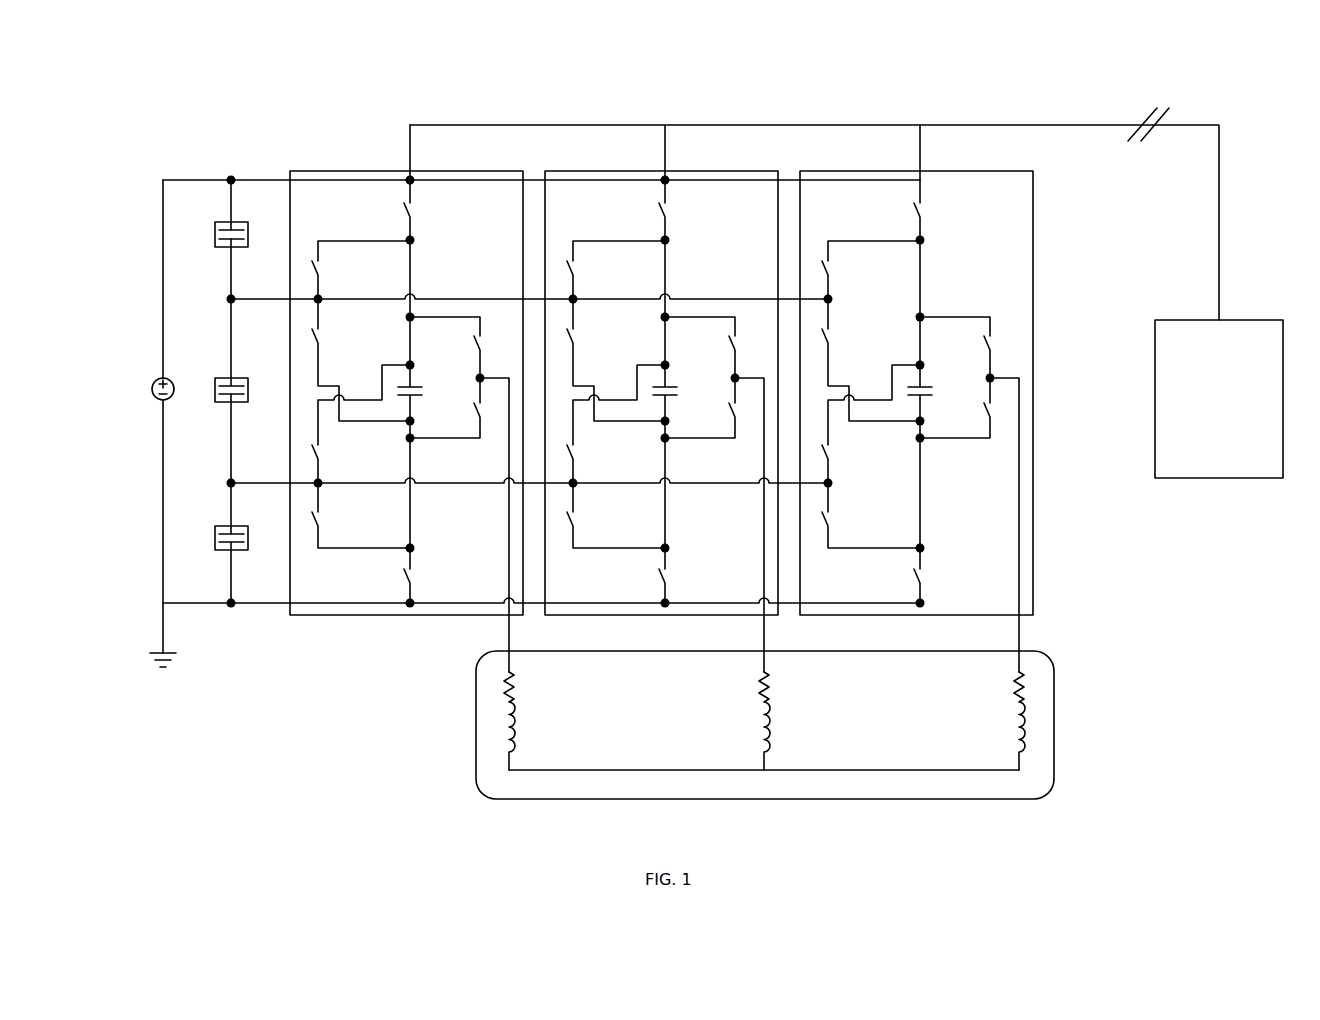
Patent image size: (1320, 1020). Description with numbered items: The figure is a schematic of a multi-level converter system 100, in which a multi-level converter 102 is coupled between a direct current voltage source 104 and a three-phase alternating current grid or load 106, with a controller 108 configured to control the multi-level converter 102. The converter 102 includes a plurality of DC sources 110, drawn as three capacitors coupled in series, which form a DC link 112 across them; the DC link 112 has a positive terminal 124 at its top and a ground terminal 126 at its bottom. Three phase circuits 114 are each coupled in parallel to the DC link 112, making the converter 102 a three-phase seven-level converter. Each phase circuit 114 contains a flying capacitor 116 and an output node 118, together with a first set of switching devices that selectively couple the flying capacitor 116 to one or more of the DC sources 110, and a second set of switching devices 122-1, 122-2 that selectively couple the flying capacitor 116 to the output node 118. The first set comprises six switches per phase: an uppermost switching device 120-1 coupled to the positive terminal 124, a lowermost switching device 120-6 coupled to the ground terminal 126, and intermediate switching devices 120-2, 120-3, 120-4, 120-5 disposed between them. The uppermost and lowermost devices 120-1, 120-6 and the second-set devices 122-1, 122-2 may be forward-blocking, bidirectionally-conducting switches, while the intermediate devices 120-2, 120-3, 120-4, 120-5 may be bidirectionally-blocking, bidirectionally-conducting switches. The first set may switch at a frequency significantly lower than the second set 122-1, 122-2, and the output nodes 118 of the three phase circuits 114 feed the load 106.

The multi-level converter system 100 is at (316, 102).
The multi-level converter 102 is at (359, 637).
The direct current (DC) voltage source 104 is at (172, 398).
The alternating current (AC) load 106 is at (927, 800).
The controller 108 is at (1219, 480).
The DC sources 110 is at (249, 386).
The DC link 112 is at (153, 327).
The phase circuits 114 is at (413, 177).
The flying capacitor 116 is at (682, 394).
The output node 118 is at (483, 377).
The uppermost switching device 120-1 is at (688, 210).
The intermediate switching device 120-2 is at (616, 360).
The intermediate switching device 120-3 is at (616, 270).
The intermediate switching device 120-4 is at (616, 496).
The intermediate switching device 120-5 is at (616, 424).
The lowermost switching device 120-6 is at (688, 575).
The second set switching device 122-1 is at (700, 347).
The second set switching device 122-2 is at (700, 408).
The positive terminal 124 is at (233, 178).
The ground terminal 126 is at (233, 607).